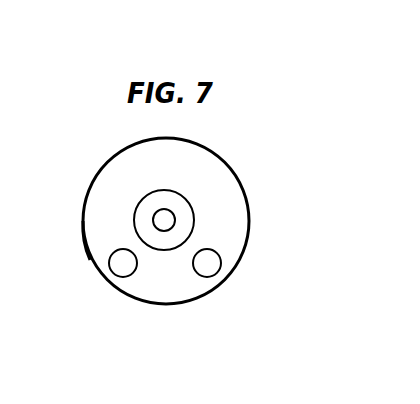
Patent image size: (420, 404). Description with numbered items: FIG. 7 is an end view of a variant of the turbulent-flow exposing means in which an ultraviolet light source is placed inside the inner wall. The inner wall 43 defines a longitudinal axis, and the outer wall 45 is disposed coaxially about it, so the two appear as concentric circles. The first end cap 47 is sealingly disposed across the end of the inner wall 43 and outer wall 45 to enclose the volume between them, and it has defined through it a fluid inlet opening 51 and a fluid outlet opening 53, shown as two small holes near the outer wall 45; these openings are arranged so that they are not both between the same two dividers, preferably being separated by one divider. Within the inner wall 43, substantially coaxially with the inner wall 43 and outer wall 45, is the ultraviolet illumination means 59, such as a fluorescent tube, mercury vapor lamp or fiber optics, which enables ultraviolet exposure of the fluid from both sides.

The inner wall 43 is at (136, 212).
The outer wall 45 is at (84, 246).
The first end cap 47 is at (224, 222).
The fluid inlet opening 51 is at (120, 268).
The fluid outlet opening 53 is at (205, 268).
The ultraviolet illumination means 59 is at (176, 217).